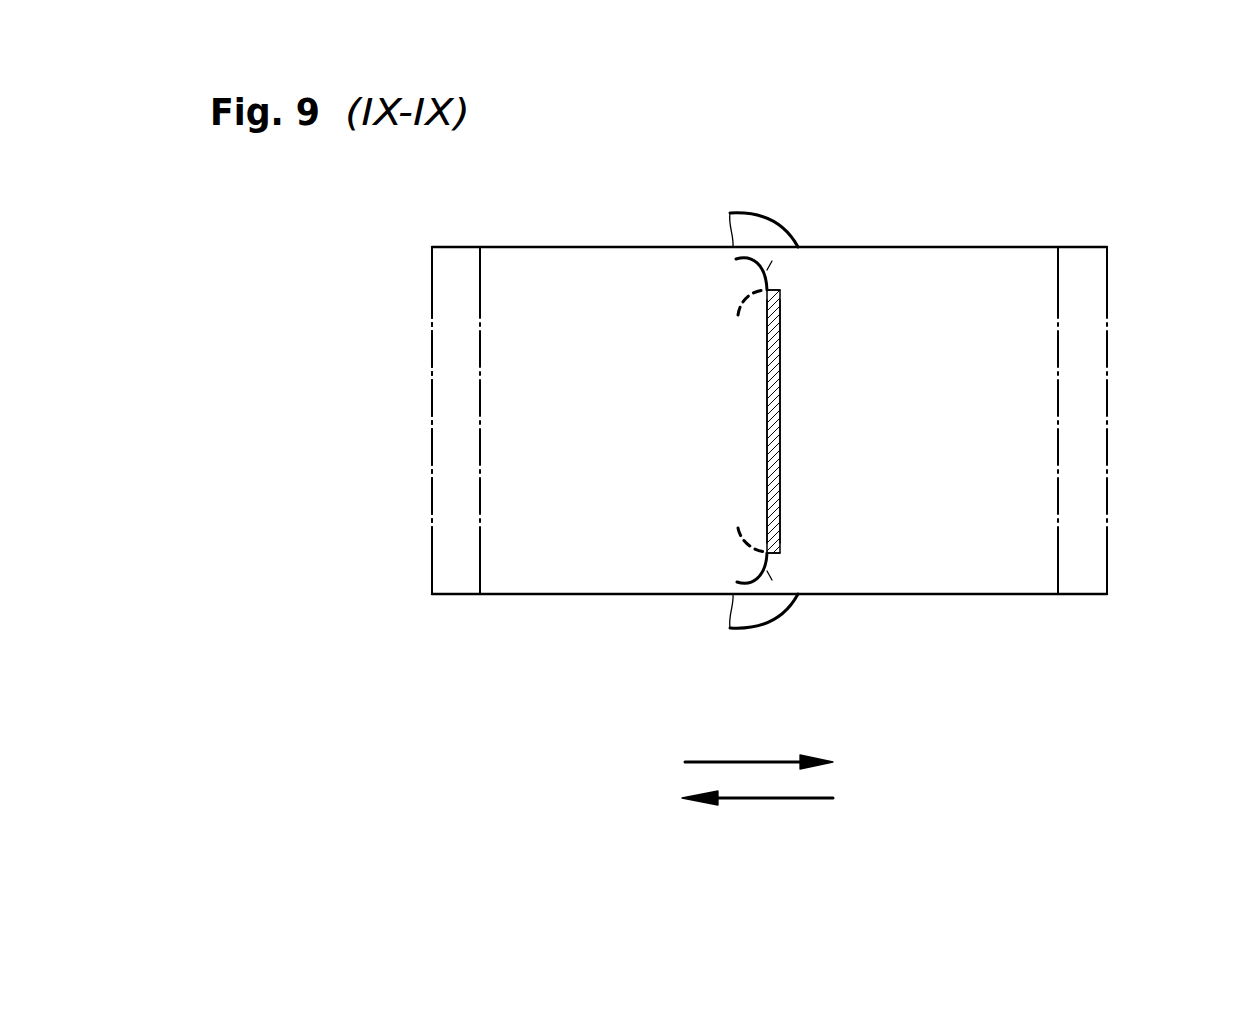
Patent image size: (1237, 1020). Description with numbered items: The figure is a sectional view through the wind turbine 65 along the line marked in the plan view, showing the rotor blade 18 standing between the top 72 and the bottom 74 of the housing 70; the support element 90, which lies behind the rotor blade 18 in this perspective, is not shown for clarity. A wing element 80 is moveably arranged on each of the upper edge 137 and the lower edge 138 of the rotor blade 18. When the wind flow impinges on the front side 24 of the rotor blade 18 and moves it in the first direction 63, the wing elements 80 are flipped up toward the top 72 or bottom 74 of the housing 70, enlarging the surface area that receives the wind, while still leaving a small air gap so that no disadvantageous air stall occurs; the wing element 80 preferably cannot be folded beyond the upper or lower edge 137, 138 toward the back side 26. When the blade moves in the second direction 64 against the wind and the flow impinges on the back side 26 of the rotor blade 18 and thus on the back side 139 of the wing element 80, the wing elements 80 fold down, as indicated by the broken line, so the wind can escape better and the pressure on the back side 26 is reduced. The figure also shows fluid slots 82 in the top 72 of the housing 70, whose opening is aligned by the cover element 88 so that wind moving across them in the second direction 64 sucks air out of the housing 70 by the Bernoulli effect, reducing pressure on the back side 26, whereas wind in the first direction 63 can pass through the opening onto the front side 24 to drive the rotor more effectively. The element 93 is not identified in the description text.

The rotor blade 18 is at (781, 408).
The front side 24 is at (767, 470).
The back side 26 is at (782, 478).
The first direction 63 is at (752, 762).
The second direction 64 is at (754, 805).
The wind turbine 65 is at (905, 162).
The housing 70 is at (1034, 246).
The top 72 is at (533, 247).
The bottom 74 is at (993, 594).
The wing element 80 is at (736, 260).
The fluid slots 82 is at (755, 247).
The cover element 88 is at (732, 233).
The support element 90 is at (452, 407).
The outer sealing lip 93 is at (798, 246).
The upper edge 137 is at (779, 287).
The lower edge 138 is at (777, 556).
The back side of the wing element 139 is at (768, 268).